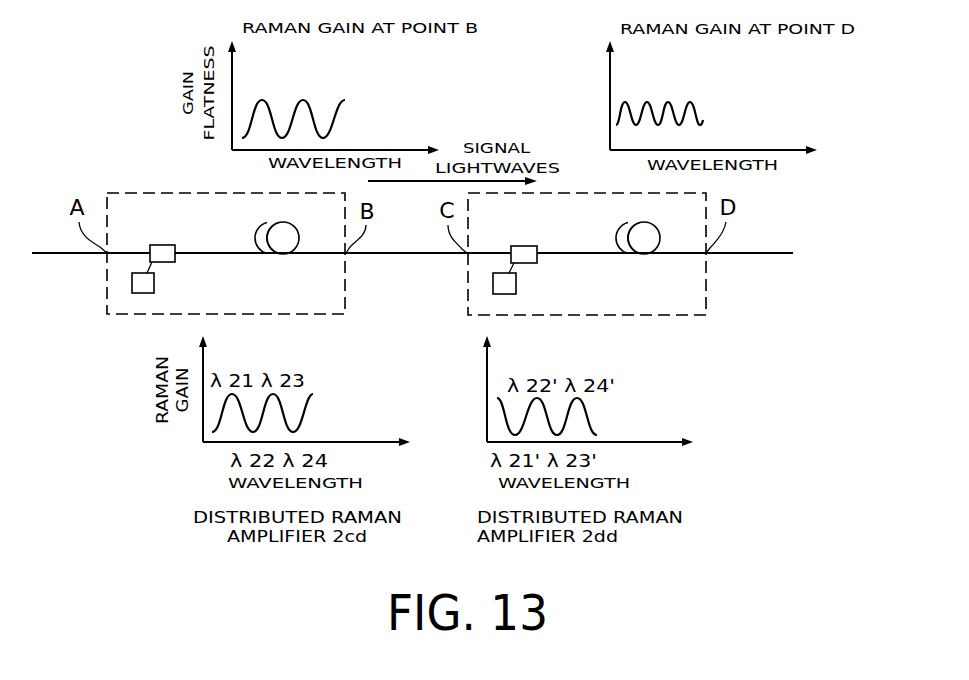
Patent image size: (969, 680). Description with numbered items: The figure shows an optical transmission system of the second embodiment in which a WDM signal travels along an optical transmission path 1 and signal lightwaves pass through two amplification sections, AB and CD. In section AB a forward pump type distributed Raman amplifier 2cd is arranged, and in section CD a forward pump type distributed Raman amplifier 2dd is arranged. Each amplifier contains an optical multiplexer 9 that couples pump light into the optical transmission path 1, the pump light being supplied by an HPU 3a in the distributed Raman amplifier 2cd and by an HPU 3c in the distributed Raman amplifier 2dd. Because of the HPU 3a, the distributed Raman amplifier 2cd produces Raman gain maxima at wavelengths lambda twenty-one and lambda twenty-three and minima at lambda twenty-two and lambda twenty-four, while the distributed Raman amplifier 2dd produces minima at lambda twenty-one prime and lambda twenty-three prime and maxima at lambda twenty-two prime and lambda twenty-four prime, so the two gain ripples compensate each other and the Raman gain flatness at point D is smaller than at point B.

The optical transmission path 1 is at (247, 227).
The optical multiplexer 9 is at (162, 245).
The HPU 3a is at (154, 284).
The HPU 3c is at (516, 284).
The distributed Raman amplifier 2cd is at (107, 294).
The distributed Raman amplifier 2dd is at (468, 294).